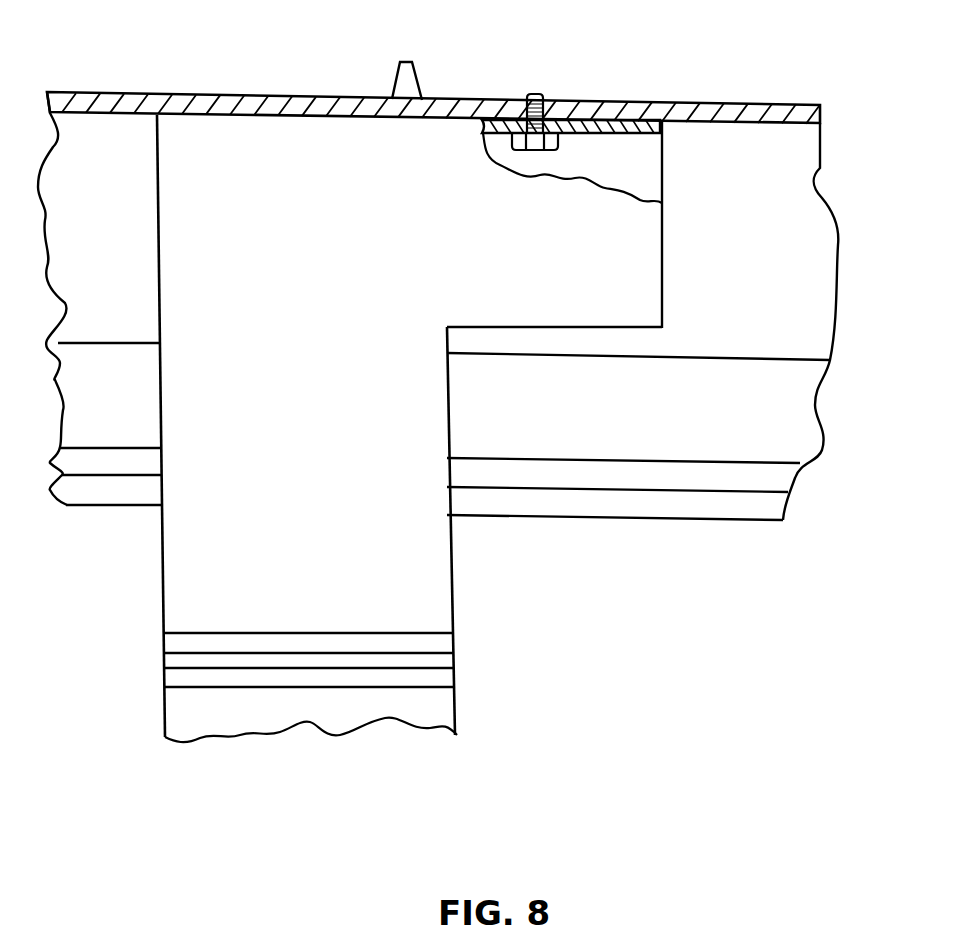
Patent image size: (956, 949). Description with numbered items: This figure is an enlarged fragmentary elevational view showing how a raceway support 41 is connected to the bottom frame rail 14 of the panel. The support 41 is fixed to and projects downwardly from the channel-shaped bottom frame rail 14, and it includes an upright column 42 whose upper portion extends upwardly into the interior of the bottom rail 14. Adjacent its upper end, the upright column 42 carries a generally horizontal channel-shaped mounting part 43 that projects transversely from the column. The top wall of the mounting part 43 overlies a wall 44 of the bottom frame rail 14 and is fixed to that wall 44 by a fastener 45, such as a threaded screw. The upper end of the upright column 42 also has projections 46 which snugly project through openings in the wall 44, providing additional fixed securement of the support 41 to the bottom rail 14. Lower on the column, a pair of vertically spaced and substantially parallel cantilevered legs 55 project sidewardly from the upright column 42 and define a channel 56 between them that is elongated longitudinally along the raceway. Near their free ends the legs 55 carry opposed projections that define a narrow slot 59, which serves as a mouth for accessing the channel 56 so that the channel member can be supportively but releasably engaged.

The bottom frame rail 14 is at (795, 412).
The support 41 is at (162, 590).
The upright column 42 is at (407, 582).
The mounting part 43 is at (622, 242).
The wall 44 is at (697, 110).
The fastener 45 is at (531, 95).
The projections 46 is at (403, 87).
The cantilevered legs 55 is at (316, 650).
The channel 56 is at (366, 660).
The slot 59 is at (240, 660).